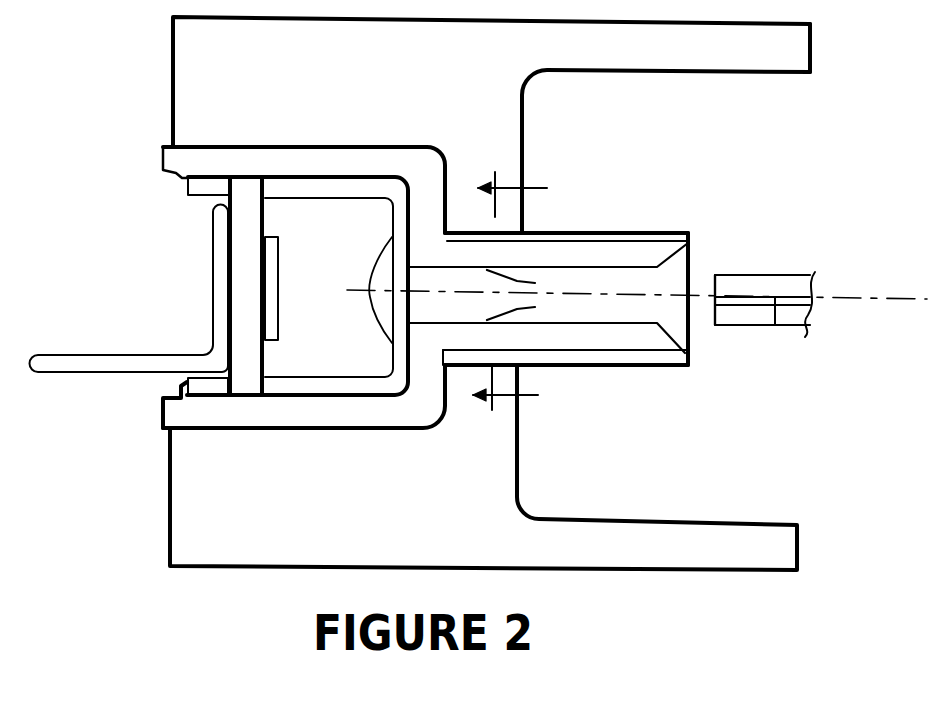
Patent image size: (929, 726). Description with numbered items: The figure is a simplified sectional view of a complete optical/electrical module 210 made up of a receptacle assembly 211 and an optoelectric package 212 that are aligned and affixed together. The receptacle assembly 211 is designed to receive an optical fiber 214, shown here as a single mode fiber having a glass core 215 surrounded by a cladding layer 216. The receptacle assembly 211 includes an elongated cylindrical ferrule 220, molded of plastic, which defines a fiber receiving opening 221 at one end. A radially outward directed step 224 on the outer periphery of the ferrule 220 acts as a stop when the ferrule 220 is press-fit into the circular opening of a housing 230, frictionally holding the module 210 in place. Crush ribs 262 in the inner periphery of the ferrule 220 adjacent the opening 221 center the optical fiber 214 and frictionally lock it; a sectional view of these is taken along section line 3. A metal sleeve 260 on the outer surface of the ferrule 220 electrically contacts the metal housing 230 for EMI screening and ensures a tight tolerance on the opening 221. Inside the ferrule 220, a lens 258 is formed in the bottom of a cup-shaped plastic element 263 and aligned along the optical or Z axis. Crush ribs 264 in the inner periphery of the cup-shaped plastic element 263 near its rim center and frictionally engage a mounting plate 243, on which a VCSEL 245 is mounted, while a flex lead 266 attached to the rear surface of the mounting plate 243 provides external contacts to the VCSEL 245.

The optical/electrical module 210 is at (882, 251).
The receptacle assembly 211 is at (172, 272).
The optoelectric package 212 is at (462, 154).
The optical fiber 214 is at (746, 283).
The glass core 215 is at (773, 300).
The cladding layer 216 is at (723, 287).
The ferrule 220 is at (313, 155).
The fiber receiving opening 221 is at (667, 322).
The radially outward directed step 224 is at (428, 416).
The housing 230 is at (800, 58).
The mounting plate 243 is at (250, 367).
The VCSEL 245 is at (268, 260).
The lens 258 is at (380, 277).
The metal sleeve 260 is at (563, 233).
The crush ribs 262 is at (637, 295).
The cup-shaped plastic element 263 is at (337, 387).
The crush ribs 264 is at (187, 183).
The flex lead 266 is at (106, 362).
The section line 3- 3 is at (510, 297).
The Z axis Z is at (640, 297).